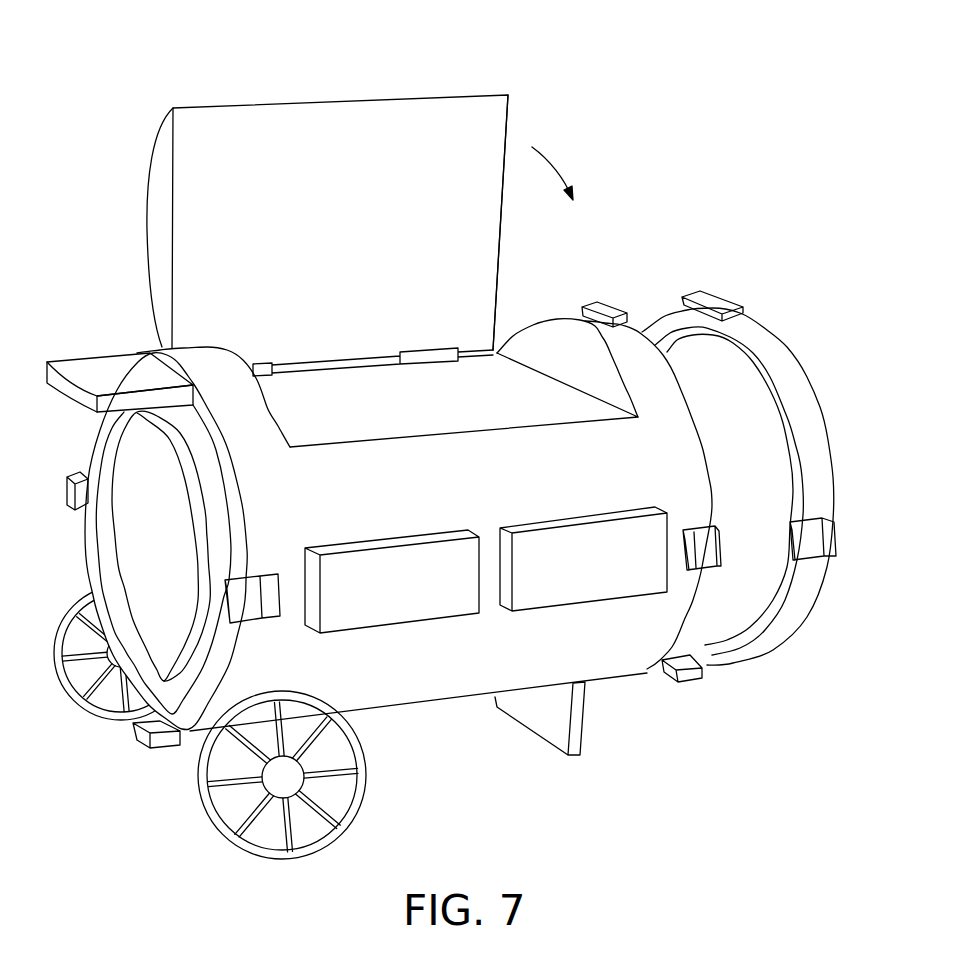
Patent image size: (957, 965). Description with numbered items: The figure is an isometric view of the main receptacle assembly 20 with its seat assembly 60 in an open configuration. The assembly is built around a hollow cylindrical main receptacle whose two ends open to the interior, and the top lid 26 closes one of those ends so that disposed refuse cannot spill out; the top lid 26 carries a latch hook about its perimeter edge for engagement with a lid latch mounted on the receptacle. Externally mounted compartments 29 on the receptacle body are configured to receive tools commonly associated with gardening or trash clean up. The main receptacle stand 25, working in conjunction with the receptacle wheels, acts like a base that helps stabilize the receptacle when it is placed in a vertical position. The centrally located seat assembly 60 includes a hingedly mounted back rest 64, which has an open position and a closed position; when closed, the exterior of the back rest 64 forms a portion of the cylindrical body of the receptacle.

The main receptacle assembly 20 is at (437, 703).
The main receptacle stand 25 is at (108, 372).
The top lid 26 is at (797, 398).
The compartments 29 is at (585, 573).
The seat assembly 60 is at (365, 100).
The back rest 64 is at (488, 258).